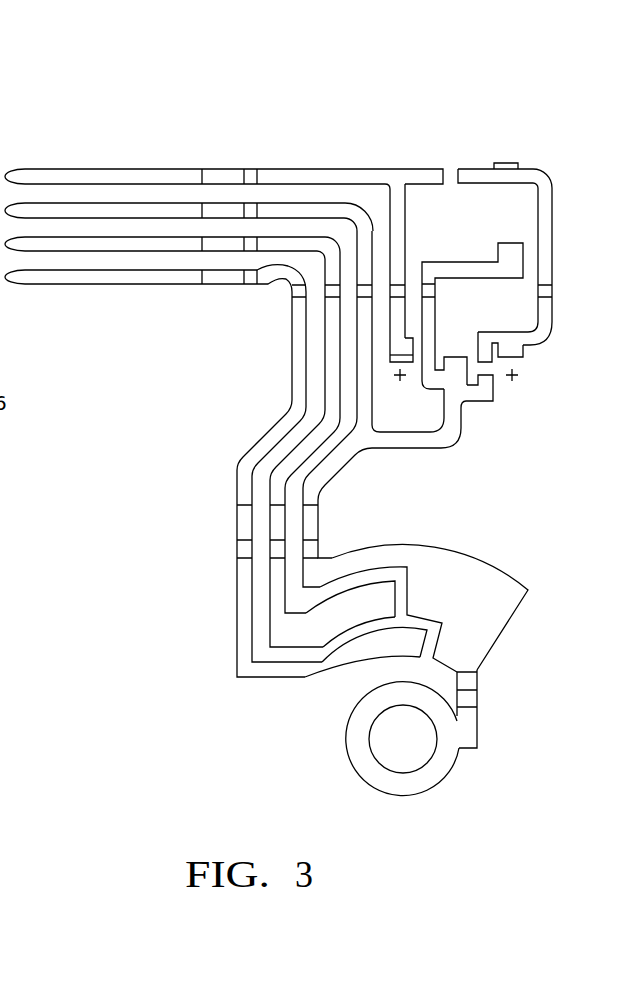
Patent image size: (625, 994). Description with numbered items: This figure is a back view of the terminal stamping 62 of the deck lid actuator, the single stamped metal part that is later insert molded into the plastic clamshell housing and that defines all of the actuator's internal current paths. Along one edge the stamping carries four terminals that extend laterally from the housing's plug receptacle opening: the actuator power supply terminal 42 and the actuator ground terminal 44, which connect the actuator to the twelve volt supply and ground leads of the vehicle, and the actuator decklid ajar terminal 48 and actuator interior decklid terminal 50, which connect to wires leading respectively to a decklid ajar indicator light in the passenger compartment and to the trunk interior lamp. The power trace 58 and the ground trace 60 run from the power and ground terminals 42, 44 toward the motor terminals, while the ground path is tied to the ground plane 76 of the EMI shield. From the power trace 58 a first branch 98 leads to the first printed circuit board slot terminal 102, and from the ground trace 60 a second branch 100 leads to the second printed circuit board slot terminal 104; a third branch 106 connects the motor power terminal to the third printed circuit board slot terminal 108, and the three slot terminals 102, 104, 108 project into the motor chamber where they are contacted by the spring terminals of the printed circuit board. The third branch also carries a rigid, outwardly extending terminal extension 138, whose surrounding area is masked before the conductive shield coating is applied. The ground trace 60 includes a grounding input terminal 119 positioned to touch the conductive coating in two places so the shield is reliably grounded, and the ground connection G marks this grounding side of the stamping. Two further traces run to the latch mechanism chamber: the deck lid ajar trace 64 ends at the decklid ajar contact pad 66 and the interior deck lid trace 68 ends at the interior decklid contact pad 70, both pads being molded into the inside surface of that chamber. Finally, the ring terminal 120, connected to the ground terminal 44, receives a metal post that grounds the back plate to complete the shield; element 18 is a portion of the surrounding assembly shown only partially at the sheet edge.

The connector housing 18 is at (12, 53).
The actuator power supply terminal 42 is at (33, 176).
The actuator ground terminal 44 is at (32, 212).
The ground plane 76 is at (189, 217).
The actuator decklid ajar terminal 48 is at (30, 242).
The actuator interior decklid terminal 50 is at (32, 274).
The power trace 58 is at (396, 218).
The ground trace 60 is at (365, 215).
The first branch 98 is at (402, 257).
The first printed circuit board slot terminal 102 is at (397, 357).
The second printed circuit board slot terminal 104 is at (457, 358).
The third branch 106 is at (542, 327).
The third printed circuit board slot terminal 108 is at (513, 357).
The rigid terminal extension 138 is at (507, 160).
The grounding input terminal 119 is at (510, 265).
The ground connection G is at (475, 399).
The second branch 100 is at (413, 443).
The deck lid ajar trace 64 is at (290, 468).
The interior deck lid trace 68 is at (243, 590).
The decklid ajar contact pad 66 is at (360, 608).
The interior decklid contact pad 70 is at (363, 655).
The terminal stamping 62 is at (508, 623).
The ring terminal 120 is at (433, 768).